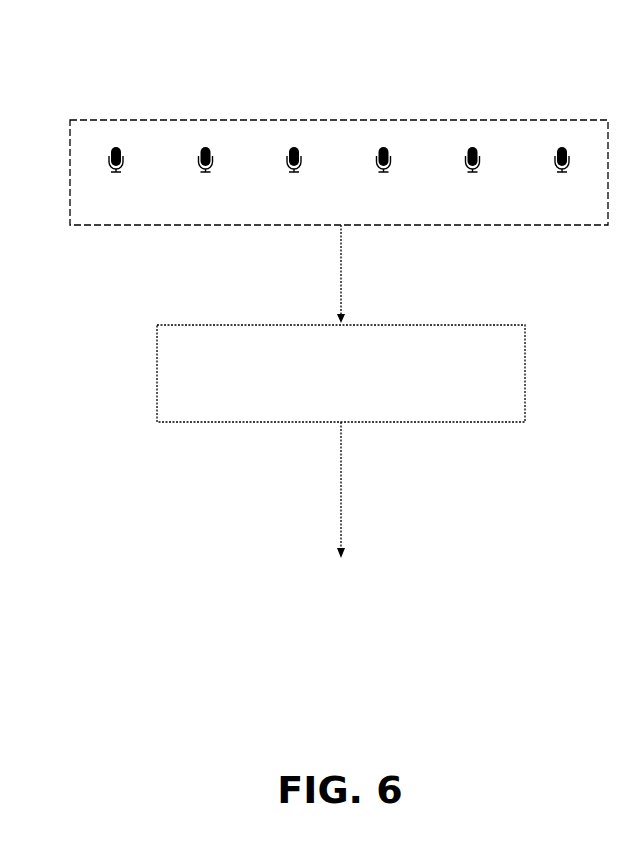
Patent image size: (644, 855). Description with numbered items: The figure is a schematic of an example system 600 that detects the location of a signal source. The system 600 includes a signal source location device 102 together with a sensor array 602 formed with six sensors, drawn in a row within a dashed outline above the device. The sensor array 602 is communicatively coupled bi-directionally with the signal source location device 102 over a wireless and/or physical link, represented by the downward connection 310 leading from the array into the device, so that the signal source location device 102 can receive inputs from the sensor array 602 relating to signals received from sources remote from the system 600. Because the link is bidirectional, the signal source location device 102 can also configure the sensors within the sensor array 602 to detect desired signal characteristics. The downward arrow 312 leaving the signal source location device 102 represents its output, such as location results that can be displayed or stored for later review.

The system 600 is at (117, 52).
The sensor array 602 is at (460, 117).
The microphone signals input 310 is at (340, 290).
The signal source location device 102 is at (341, 373).
The location output 312 is at (340, 493).